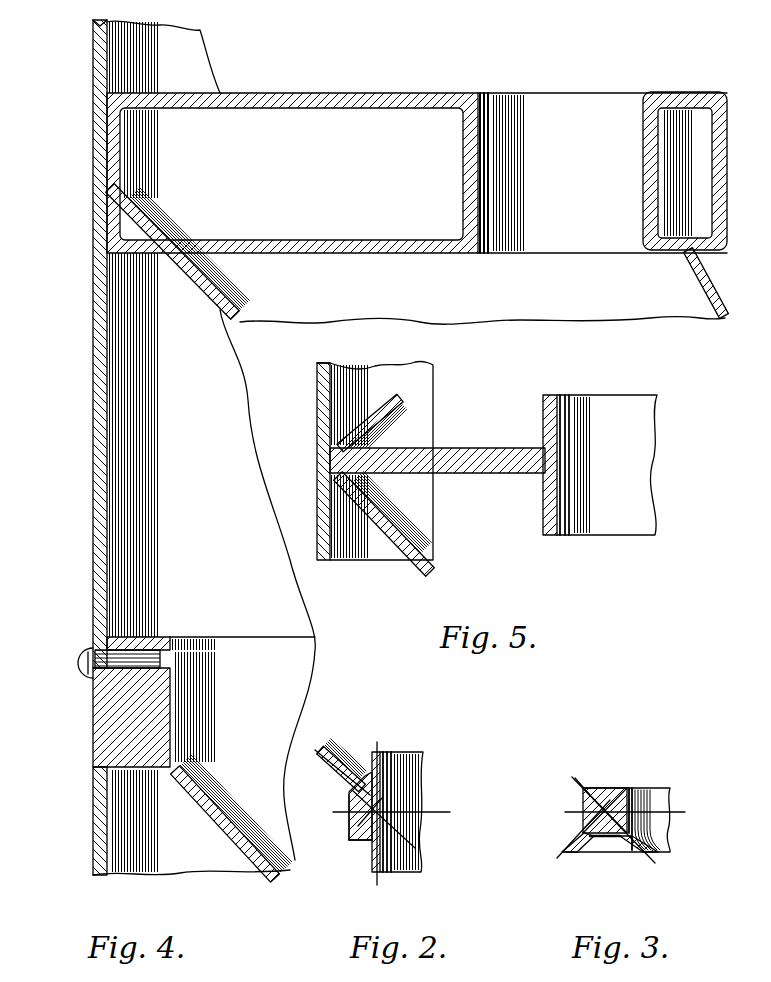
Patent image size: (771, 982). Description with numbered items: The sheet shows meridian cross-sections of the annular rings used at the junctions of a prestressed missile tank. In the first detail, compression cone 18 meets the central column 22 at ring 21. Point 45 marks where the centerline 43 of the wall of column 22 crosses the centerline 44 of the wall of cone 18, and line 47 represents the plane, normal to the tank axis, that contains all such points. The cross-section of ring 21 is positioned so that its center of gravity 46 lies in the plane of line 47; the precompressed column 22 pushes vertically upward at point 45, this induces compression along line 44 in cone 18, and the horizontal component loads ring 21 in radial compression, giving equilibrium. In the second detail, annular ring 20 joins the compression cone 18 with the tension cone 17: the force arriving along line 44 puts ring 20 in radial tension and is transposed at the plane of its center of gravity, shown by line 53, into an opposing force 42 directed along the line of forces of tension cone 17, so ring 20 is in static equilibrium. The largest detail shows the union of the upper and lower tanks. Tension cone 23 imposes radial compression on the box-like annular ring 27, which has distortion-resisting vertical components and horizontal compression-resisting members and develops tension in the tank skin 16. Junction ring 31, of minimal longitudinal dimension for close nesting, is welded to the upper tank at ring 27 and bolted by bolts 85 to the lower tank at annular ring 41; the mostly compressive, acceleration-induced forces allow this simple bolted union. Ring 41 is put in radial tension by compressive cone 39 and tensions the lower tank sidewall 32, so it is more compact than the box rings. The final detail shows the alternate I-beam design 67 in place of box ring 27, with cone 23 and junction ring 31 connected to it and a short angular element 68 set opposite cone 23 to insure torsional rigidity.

In FIG. 4, the tank skin 16 is at (93, 57).
In FIG. 5, the tank skin 16 is at (317, 372).
In FIG. 4, the annular ring 27 is at (560, 93).
In FIG. 4, the cone 23 is at (218, 315).
In FIG. 5, the cone 23 is at (425, 575).
In FIG. 4, the junction ring 31 is at (93, 428).
In FIG. 5, the junction ring 31 is at (317, 556).
In FIG. 4, the annular ring 41 is at (162, 637).
In FIG. 4, the bolts 85 is at (80, 660).
In FIG. 4, the lower tank sidewall 32 is at (93, 838).
In FIG. 4, the compressive cone 39 is at (232, 850).
In FIG. 5, the angular element 68 is at (405, 402).
In FIG. 5, the I-beam design 67 is at (440, 448).
In FIG. 2, the centerline 44 is at (315, 750).
In FIG. 3, the centerline 44 is at (575, 778).
In FIG. 2, the cone 18 is at (325, 772).
In FIG. 3, the cone 18 is at (630, 855).
In FIG. 2, the center of gravity 46 is at (348, 806).
In FIG. 3, the center of gravity 46 is at (595, 790).
In FIG. 2, the ring 21 is at (350, 822).
In FIG. 2, the point 45 is at (348, 840).
In FIG. 3, the point 45 is at (605, 810).
In FIG. 2, the column 22 is at (372, 862).
In FIG. 2, the centerline 43 is at (378, 878).
In FIG. 2, the line 47 is at (435, 812).
In FIG. 3, the annular ring 20 is at (605, 790).
In FIG. 3, the opposing force 42 is at (635, 785).
In FIG. 3, the line 53 is at (680, 812).
In FIG. 3, the tension cone 17 is at (570, 847).